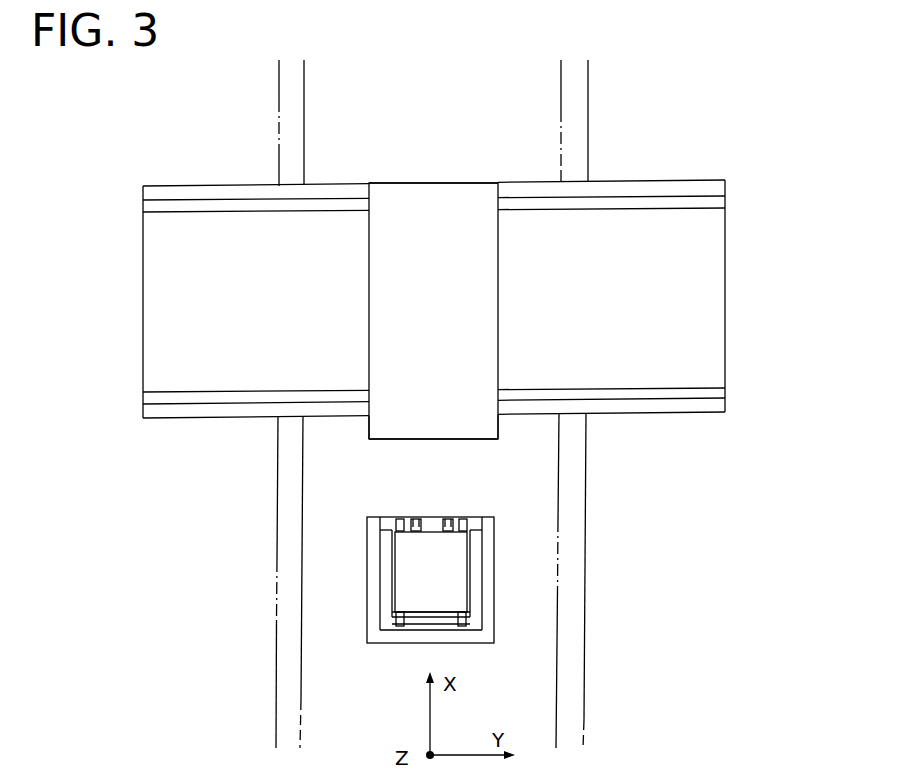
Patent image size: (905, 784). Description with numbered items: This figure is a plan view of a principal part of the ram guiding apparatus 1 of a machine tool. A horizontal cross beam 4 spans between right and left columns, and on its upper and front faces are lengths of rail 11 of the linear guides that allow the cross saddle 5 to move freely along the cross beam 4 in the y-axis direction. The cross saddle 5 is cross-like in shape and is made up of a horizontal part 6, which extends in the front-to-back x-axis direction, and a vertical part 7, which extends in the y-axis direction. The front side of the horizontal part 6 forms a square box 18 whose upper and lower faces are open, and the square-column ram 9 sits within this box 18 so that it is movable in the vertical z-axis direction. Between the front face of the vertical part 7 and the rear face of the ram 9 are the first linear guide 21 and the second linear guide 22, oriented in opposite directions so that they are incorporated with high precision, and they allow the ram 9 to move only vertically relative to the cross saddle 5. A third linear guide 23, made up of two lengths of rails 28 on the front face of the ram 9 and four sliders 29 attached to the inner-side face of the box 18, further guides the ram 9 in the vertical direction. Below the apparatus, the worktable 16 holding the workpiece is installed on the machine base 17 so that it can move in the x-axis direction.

The ram guiding apparatus 1 is at (243, 573).
The cross beam 4 is at (728, 337).
The cross saddle 5 is at (408, 176).
The horizontal part 6 is at (451, 192).
The vertical part 7 is at (370, 451).
The ram 9 is at (453, 570).
The rail 11 is at (192, 206).
The worktable 16 is at (300, 672).
The machine base 17 is at (588, 468).
The box 18 is at (372, 580).
The first linear guide 21 is at (393, 528).
The second linear guide 22 is at (404, 517).
The third linear guide 23 is at (393, 620).
The rail 28 is at (467, 608).
The slider 29 is at (468, 625).